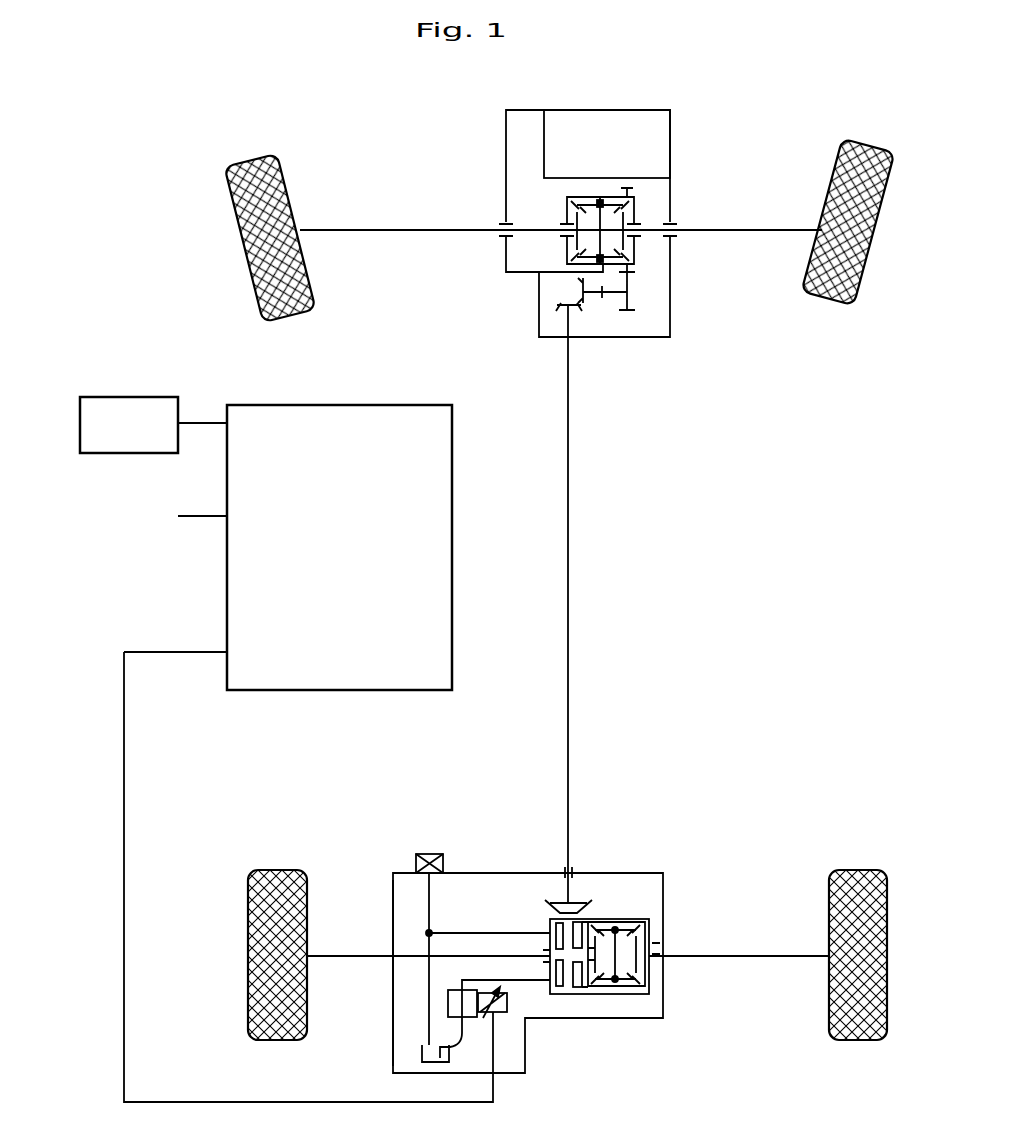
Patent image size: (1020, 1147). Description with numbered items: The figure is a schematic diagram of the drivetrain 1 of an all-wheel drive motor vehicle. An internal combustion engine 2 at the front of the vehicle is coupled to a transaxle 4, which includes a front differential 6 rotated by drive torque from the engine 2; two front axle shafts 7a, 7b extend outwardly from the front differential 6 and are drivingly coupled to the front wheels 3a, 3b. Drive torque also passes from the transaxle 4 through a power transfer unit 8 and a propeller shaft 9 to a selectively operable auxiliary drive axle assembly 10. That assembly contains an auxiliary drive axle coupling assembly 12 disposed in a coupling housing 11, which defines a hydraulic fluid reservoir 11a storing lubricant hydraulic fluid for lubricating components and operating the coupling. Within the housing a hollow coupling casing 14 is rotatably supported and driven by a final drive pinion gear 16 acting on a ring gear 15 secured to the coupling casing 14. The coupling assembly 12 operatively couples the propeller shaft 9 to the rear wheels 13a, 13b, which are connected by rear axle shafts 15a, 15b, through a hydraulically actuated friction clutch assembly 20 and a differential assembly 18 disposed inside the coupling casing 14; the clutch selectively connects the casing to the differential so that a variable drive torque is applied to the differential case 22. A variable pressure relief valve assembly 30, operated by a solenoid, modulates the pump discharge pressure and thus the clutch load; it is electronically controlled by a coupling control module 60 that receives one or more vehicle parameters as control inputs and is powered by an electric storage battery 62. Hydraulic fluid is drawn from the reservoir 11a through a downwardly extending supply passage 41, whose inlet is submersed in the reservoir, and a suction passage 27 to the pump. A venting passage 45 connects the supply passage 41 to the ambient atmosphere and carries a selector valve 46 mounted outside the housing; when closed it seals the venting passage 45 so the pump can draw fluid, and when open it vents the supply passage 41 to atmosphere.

The drivetrain 1 is at (681, 504).
The internal combustion engine 2 is at (655, 143).
The front wheel 3a is at (250, 160).
The front wheel 3b is at (831, 146).
The transaxle 4 is at (540, 203).
The front differential 6 is at (637, 208).
The front axle shaft 7a is at (366, 230).
The front axle shaft 7b is at (770, 230).
The power transfer unit 8 is at (642, 302).
The propeller shaft 9 is at (569, 641).
The auxiliary drive axle assembly 10 is at (615, 872).
The coupling housing 11 is at (393, 990).
The hydraulic fluid reservoir 11a is at (422, 1052).
The auxiliary drive axle coupling assembly 12 is at (658, 938).
The rear wheel 13a is at (282, 872).
The rear wheel 13b is at (860, 872).
The coupling casing 14 is at (622, 918).
The ring gear 15 is at (553, 994).
The rear axle half shaft 15a is at (357, 956).
The rear axle half shaft 15b is at (790, 956).
The final drive pinion gear 16 is at (560, 900).
The differential assembly 18 is at (627, 993).
The friction clutch assembly 20 is at (548, 933).
The differential case 22 is at (598, 990).
The suction passage 27 is at (455, 933).
The variable pressure relief valve assembly 30 is at (474, 1020).
The supply passage 41 is at (429, 1020).
The venting passage 45 is at (429, 893).
The selector valve 46 is at (430, 853).
The coupling control module 60 is at (340, 405).
The electric storage battery 62 is at (128, 397).